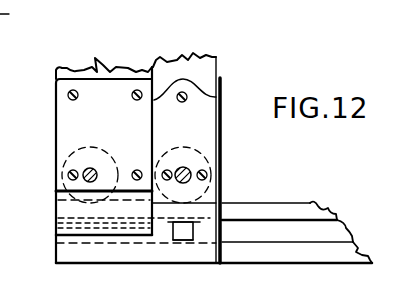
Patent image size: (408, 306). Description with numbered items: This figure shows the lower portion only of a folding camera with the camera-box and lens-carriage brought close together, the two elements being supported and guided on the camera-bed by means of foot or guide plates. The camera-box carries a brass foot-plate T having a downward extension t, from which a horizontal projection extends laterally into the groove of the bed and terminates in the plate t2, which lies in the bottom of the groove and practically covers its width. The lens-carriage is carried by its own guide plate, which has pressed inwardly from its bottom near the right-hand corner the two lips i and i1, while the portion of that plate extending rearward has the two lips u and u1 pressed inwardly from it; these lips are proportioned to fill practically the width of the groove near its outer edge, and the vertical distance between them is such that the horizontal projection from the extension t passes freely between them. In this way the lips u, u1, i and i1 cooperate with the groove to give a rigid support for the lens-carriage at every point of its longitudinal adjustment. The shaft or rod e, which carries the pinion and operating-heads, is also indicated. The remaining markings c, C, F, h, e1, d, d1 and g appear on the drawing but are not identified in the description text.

The section line marker c is at (10, 14).
The casing (left block) C is at (110, 77).
The frame (right block) F is at (197, 65).
The bearing region (dashed circle) h is at (65, 165).
The shaft or rod e is at (93, 170).
The hatched screw / shaft e1 is at (188, 170).
The lip u is at (50, 213).
The lip u1 is at (58, 243).
The foot-plate T is at (57, 192).
The downward extension t is at (136, 217).
The plate t2 is at (222, 220).
The lip i is at (191, 224).
The lip i1 is at (178, 241).
The vertical bar d is at (222, 263).
The base plate d1 is at (323, 253).
The stepped piece g is at (320, 232).